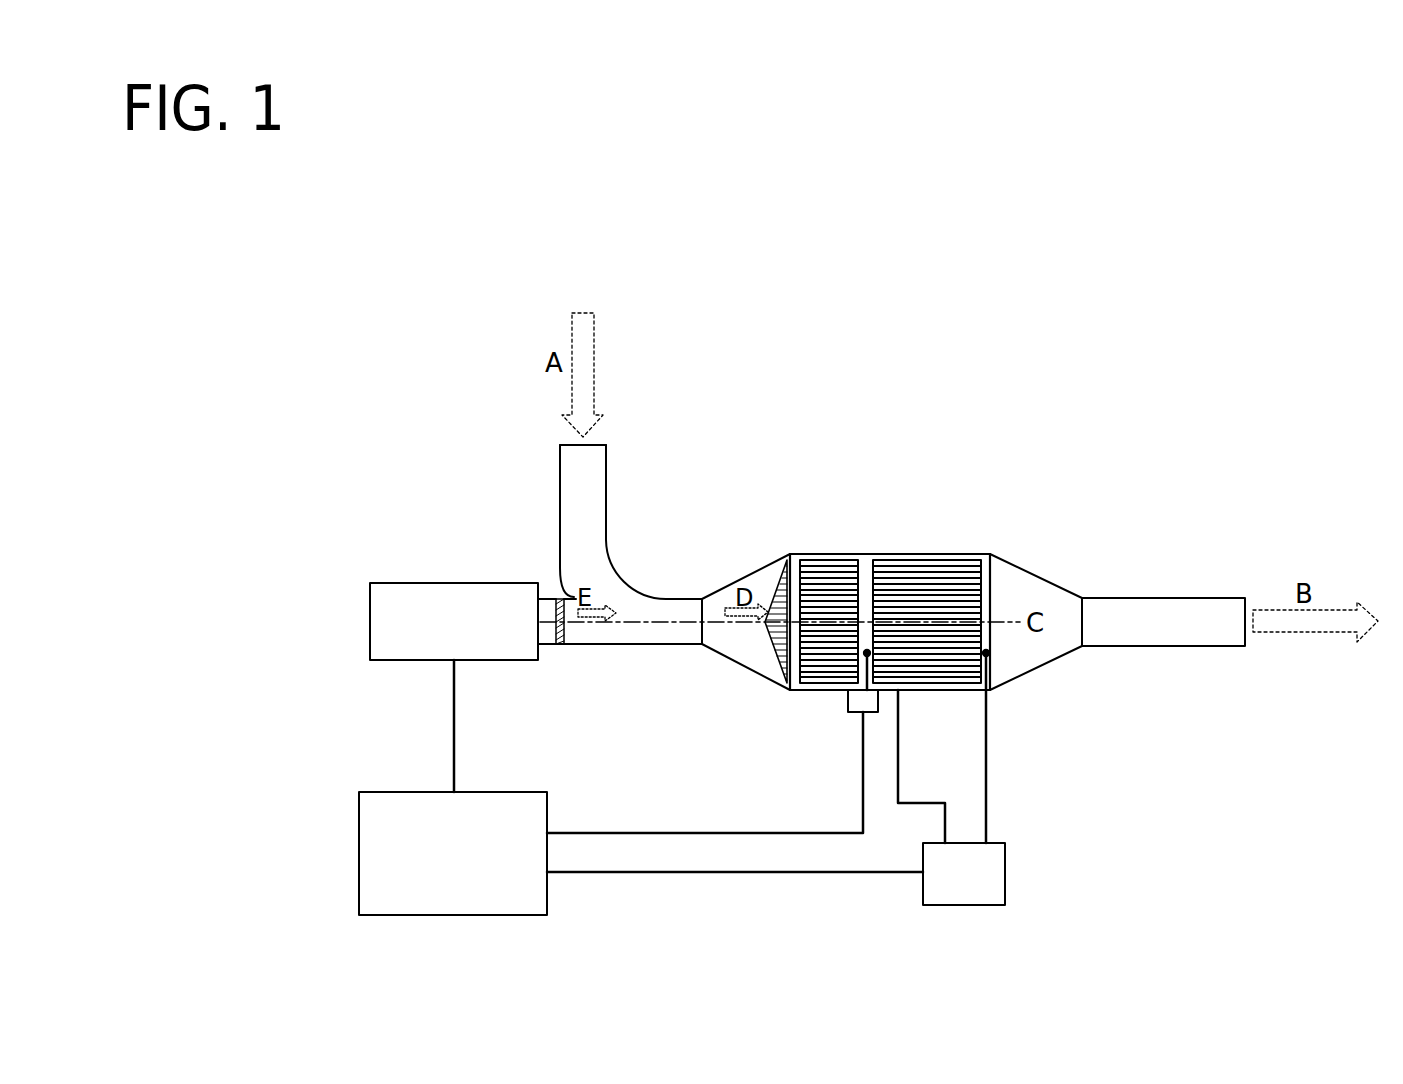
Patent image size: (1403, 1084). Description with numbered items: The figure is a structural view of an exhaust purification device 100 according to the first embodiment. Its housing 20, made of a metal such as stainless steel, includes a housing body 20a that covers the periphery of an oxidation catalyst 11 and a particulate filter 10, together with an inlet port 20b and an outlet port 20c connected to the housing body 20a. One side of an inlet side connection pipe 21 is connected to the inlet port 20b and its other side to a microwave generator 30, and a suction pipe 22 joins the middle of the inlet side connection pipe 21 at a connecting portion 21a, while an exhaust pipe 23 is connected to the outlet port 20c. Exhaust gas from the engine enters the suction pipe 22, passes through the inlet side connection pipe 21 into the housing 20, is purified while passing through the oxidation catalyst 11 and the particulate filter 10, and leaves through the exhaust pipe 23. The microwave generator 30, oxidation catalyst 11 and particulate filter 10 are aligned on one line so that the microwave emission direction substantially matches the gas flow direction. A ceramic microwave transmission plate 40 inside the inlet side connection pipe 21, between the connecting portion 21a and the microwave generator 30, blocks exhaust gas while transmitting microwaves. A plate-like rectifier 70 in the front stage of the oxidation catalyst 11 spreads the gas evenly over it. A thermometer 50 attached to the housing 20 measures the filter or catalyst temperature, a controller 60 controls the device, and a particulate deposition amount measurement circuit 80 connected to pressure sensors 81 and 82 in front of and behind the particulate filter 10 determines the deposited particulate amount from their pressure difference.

The exhaust purification device 100 is at (413, 303).
The suction pipe 22 is at (560, 493).
The connecting portion 21a is at (604, 586).
The inlet side connection pipe 21 is at (672, 597).
The housing 20 is at (892, 559).
The inlet port 20b is at (748, 560).
The housing body 20a is at (888, 554).
The outlet port 20c is at (1035, 583).
The exhaust pipe 23 is at (1162, 598).
The microwave generator 30 is at (370, 618).
The microwave transmission plate 40 is at (560, 646).
The rectifier 70 is at (772, 652).
The oxidation catalyst 11 is at (810, 688).
The pressure sensor 81 is at (862, 656).
The thermometer 50 is at (853, 713).
The particulate filter 10 is at (922, 690).
The pressure sensor 82 is at (992, 660).
The controller 60 is at (518, 792).
The particulate deposition amount measurement circuit 80 is at (1005, 870).